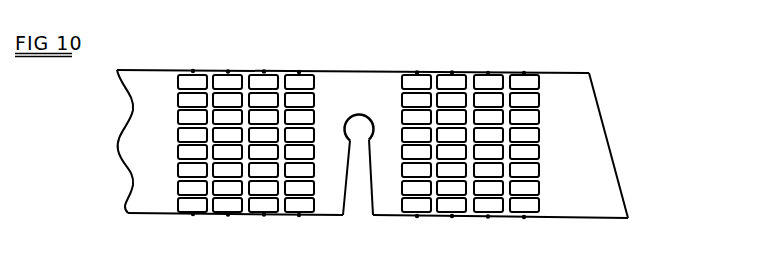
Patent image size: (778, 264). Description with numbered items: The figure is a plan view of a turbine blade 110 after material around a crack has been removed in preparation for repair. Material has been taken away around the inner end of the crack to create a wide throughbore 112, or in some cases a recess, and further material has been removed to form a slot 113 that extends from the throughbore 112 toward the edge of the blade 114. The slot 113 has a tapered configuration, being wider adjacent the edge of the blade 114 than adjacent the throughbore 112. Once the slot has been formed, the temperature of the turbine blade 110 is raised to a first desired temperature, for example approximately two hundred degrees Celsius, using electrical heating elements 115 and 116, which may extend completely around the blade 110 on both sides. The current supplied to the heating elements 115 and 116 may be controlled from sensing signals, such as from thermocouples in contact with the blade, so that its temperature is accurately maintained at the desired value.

The turbine blade 110 is at (585, 105).
The throughbore 112 is at (359, 128).
The slot 113 is at (360, 172).
The edge of the blade 114 is at (389, 217).
The electrical heating element 115 is at (462, 83).
The electrical heating element 116 is at (220, 79).